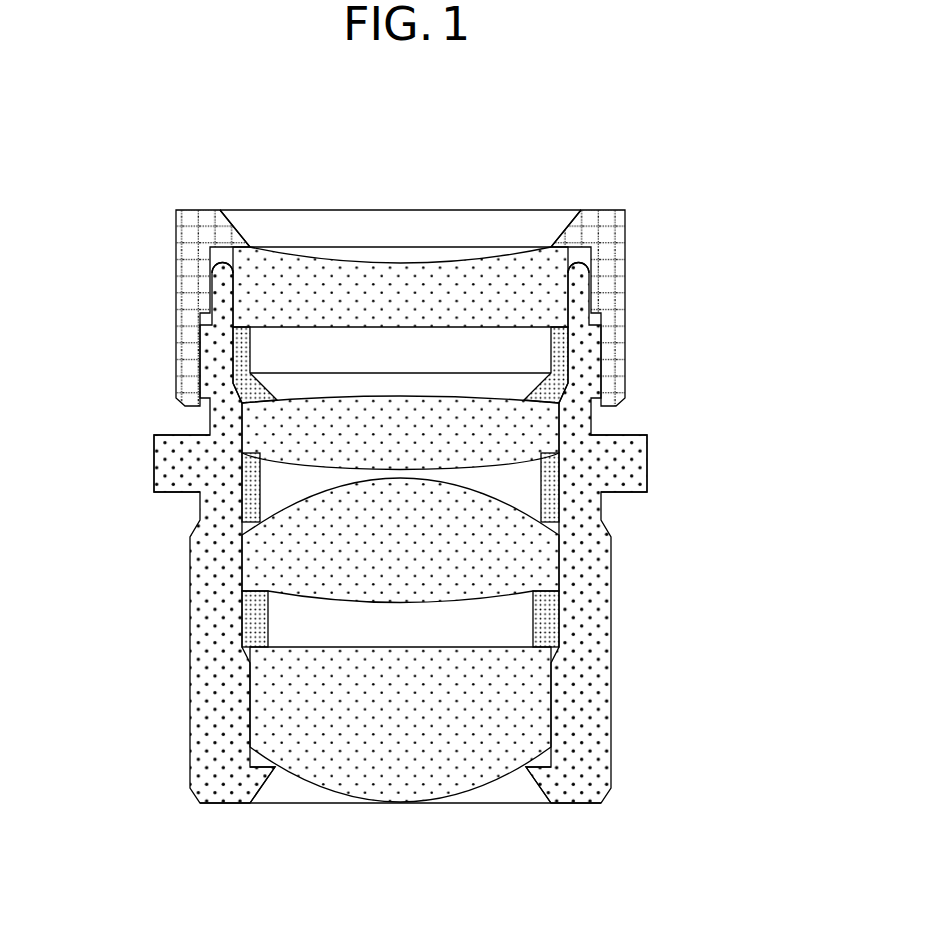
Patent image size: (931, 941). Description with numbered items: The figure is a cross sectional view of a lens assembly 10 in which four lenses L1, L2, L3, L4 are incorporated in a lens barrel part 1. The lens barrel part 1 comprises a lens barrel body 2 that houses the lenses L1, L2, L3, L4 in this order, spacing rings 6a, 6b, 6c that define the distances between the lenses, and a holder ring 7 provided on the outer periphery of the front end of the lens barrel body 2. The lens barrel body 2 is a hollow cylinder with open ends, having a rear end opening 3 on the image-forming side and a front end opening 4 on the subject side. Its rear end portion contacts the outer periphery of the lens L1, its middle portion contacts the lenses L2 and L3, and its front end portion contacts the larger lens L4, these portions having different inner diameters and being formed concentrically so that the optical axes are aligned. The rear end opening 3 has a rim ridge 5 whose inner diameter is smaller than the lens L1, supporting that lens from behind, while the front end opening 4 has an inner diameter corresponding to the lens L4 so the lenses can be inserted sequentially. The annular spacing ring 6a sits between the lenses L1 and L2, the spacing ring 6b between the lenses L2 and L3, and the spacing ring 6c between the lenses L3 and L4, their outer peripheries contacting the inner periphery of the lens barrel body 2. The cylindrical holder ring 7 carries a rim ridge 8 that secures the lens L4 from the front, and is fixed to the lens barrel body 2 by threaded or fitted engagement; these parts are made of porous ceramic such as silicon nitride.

The lens assembly 10 is at (148, 188).
The lens barrel part 1 is at (758, 243).
The lens barrel body 2 is at (648, 465).
The rear end opening 3 is at (532, 803).
The front end opening 4 is at (218, 265).
The rim ridge 5 is at (267, 782).
The spacing ring 6a is at (559, 625).
The spacing ring 6b is at (559, 498).
The spacing ring 6c is at (567, 358).
The holder ring 7 is at (625, 273).
The rim ridge 8 is at (566, 228).
The lens L1 is at (250, 703).
The lens L2 is at (240, 563).
The lens L3 is at (240, 425).
The lens L4 is at (233, 297).